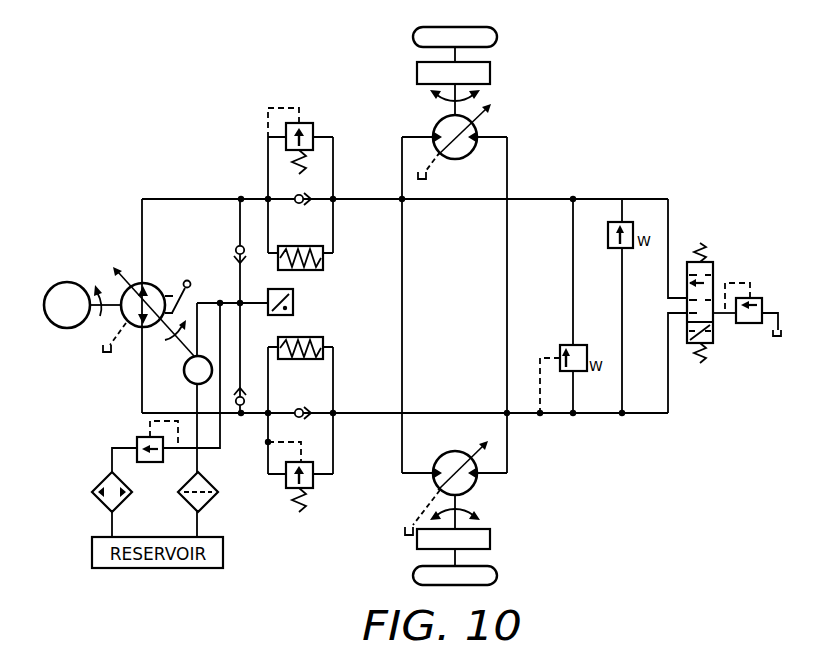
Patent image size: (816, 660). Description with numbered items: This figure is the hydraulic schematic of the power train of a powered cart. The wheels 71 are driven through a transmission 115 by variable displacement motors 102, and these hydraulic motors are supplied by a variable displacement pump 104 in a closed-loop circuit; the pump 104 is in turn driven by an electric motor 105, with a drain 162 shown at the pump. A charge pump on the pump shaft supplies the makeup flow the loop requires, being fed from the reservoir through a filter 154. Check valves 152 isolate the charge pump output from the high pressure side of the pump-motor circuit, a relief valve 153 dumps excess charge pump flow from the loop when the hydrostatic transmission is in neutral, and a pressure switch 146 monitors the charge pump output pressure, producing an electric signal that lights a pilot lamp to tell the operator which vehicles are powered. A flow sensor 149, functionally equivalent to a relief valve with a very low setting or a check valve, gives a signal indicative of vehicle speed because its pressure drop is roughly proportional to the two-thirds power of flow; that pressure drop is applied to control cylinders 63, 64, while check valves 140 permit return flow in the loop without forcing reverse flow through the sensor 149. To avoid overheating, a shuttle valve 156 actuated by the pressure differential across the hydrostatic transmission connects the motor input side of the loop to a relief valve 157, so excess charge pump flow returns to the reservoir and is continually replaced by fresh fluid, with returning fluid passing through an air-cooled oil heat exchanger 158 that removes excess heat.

The wheel 71 is at (502, 575).
The transmission 115 is at (501, 538).
The variable displacement motor 102 is at (488, 487).
The flow sensor 149 is at (326, 493).
The check valve 140 is at (303, 405).
The control cylinder 64 is at (323, 263).
The control cylinder 63 is at (323, 341).
The pressure switch 146 is at (293, 302).
The check valve 152 is at (236, 424).
The electric motor 105 is at (63, 327).
The variable displacement pump 104 is at (152, 286).
The drain line 162 is at (121, 332).
The relief valve 153 is at (138, 440).
The oil heat exchanger 158 is at (104, 480).
The filter 154 is at (210, 503).
The shuttle valve 156 is at (713, 272).
The relief valve 157 is at (762, 300).